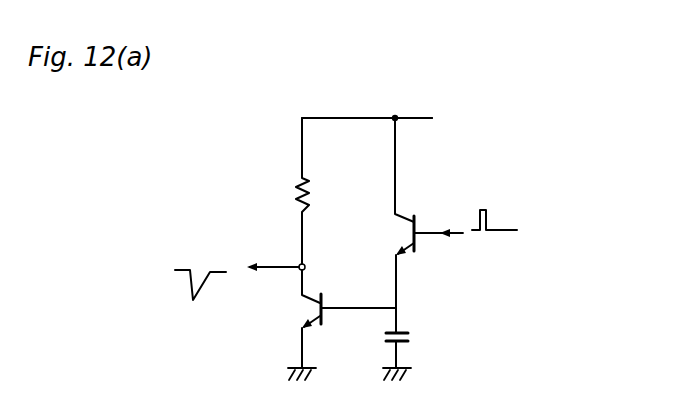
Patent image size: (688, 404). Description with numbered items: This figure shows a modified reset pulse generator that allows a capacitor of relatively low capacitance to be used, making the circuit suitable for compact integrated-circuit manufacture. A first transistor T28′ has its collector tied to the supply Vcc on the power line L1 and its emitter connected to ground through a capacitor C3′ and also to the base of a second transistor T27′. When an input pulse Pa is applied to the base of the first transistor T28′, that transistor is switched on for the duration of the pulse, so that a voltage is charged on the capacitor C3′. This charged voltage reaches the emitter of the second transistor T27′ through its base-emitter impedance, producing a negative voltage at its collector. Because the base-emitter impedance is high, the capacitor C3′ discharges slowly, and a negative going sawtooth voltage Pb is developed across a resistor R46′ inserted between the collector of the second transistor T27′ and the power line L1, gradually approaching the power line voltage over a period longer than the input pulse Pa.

The power line L1 is at (333, 118).
The supply voltage terminal Vcc is at (458, 119).
The resistor R46′ is at (297, 194).
The sawtooth voltage Pb is at (212, 276).
The second transistor T27′ is at (306, 304).
The first transistor T28′ is at (416, 248).
The input pulse Pa is at (488, 218).
The capacitor C3′ is at (410, 337).